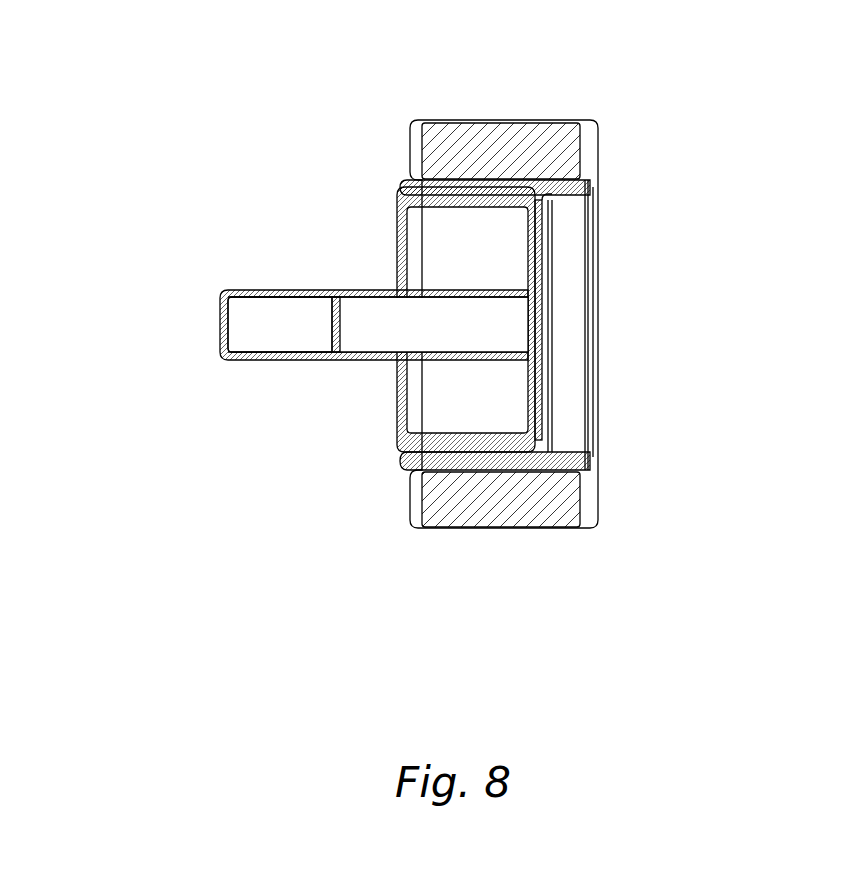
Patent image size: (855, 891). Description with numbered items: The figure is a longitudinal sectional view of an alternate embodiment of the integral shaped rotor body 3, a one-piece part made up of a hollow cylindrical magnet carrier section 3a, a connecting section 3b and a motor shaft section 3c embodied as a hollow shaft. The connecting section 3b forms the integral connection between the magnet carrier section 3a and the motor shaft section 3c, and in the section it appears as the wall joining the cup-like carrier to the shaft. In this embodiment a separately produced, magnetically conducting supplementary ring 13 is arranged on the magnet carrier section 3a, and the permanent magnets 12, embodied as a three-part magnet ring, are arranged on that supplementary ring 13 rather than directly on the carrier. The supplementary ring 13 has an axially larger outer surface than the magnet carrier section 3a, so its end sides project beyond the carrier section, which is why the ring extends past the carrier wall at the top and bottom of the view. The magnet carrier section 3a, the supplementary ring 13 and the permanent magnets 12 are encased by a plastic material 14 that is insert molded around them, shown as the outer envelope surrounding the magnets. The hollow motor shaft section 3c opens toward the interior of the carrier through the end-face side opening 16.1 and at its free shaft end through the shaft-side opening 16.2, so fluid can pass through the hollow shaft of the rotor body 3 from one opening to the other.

The integral shaped rotor body 3 is at (236, 203).
The magnet carrier section 3a is at (417, 193).
The connecting section 3b is at (538, 242).
The motor shaft section 3c is at (360, 360).
The permanent magnets 12 is at (505, 132).
The magnetically conducting supplementary ring 13 is at (557, 186).
The plastic material 14 is at (595, 148).
The end-face side opening 16.1 is at (540, 326).
The shaft-side opening 16.2 is at (223, 320).